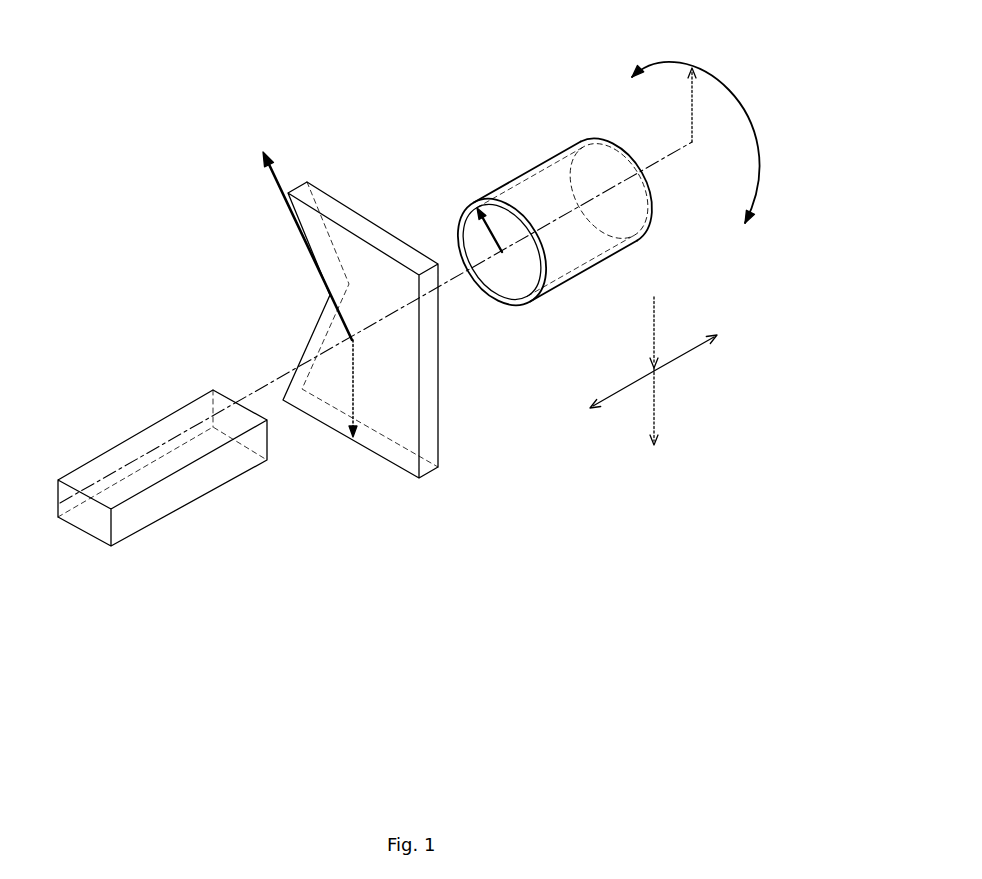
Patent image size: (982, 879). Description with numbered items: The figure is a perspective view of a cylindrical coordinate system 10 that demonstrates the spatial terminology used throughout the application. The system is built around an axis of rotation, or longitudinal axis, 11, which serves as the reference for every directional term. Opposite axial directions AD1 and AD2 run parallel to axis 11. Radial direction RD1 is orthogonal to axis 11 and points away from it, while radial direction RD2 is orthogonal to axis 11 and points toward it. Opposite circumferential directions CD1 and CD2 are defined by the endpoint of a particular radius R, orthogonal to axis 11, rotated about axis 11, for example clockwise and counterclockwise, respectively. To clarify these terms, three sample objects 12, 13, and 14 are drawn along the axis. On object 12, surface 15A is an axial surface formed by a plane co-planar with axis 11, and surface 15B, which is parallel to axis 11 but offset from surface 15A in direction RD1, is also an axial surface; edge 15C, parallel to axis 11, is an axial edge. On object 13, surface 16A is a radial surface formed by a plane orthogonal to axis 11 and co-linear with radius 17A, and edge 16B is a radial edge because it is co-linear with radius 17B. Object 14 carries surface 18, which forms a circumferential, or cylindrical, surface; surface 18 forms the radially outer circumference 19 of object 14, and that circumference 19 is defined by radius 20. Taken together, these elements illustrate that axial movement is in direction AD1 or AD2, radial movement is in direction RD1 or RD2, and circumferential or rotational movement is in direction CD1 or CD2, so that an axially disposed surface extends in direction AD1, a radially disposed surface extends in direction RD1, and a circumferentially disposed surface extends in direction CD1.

The cylindrical coordinate system 10 is at (243, 260).
The axis of rotation 11 is at (637, 170).
The object 12 is at (135, 542).
The object 13 is at (447, 468).
The object 14 is at (578, 282).
The axial surface 15A is at (132, 452).
The axial surface 15B is at (177, 497).
The axial edge 15C is at (153, 423).
The radial surface 16A is at (355, 255).
The radial edge 16B is at (314, 247).
The radius 17A is at (353, 383).
The radius 17B is at (272, 177).
The circumferential surface 18 is at (530, 172).
The radially outer circumference 19 is at (470, 215).
The radius 20 is at (466, 243).
The radius R is at (692, 100).
The circumferential direction CD1 is at (763, 188).
The circumferential direction CD2 is at (657, 53).
The radial direction RD1 is at (655, 415).
The radial direction RD2 is at (657, 313).
The axial direction AD1 is at (677, 350).
The axial direction AD2 is at (622, 387).